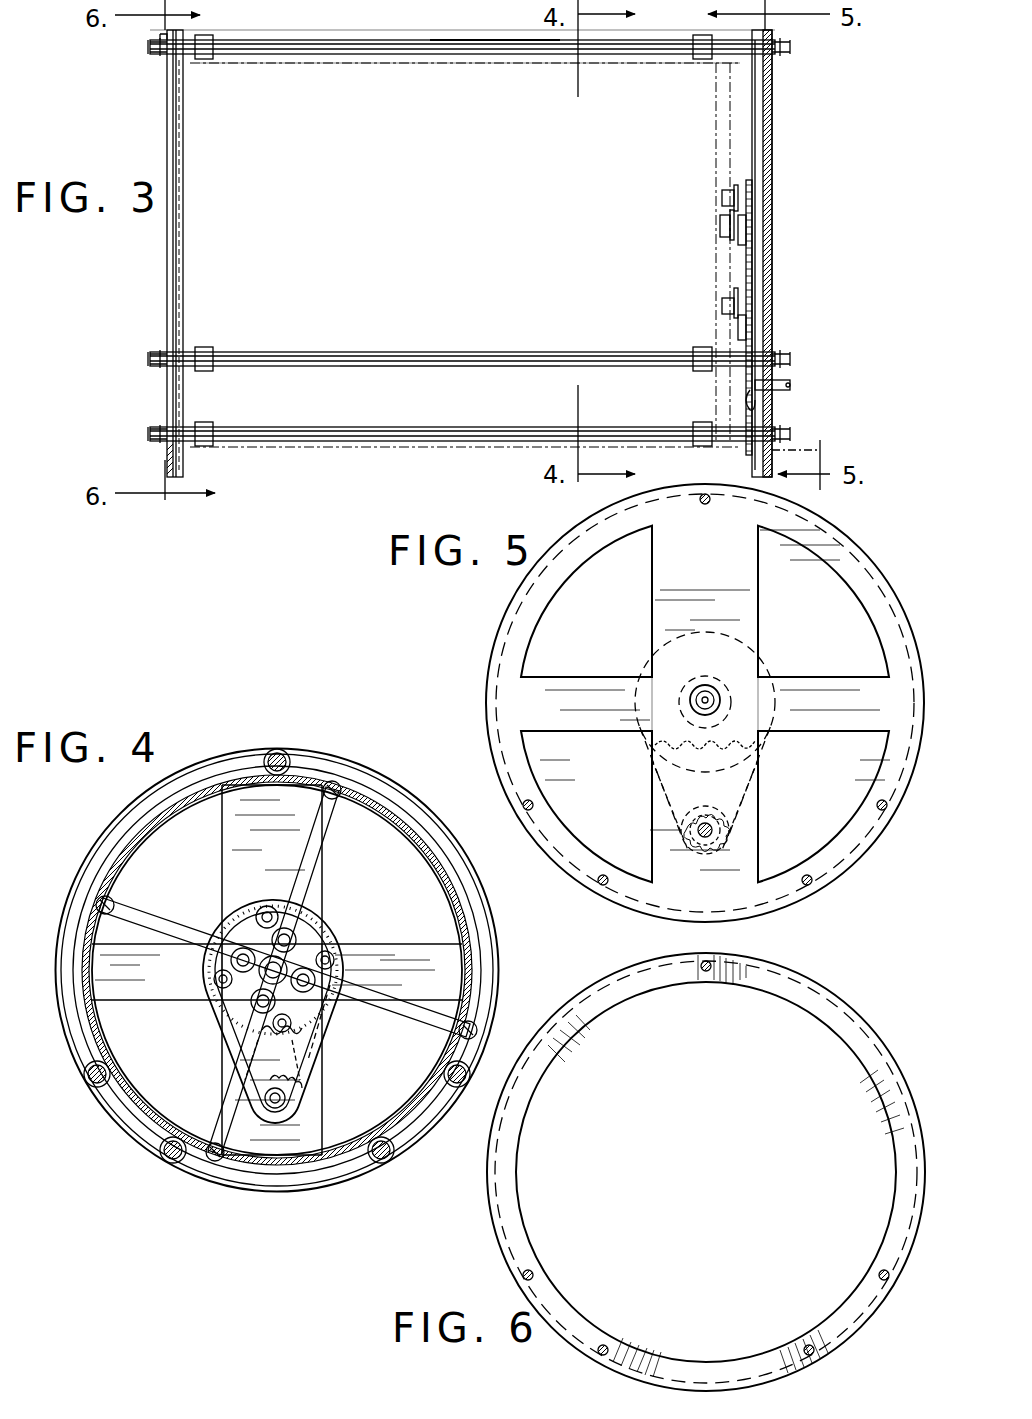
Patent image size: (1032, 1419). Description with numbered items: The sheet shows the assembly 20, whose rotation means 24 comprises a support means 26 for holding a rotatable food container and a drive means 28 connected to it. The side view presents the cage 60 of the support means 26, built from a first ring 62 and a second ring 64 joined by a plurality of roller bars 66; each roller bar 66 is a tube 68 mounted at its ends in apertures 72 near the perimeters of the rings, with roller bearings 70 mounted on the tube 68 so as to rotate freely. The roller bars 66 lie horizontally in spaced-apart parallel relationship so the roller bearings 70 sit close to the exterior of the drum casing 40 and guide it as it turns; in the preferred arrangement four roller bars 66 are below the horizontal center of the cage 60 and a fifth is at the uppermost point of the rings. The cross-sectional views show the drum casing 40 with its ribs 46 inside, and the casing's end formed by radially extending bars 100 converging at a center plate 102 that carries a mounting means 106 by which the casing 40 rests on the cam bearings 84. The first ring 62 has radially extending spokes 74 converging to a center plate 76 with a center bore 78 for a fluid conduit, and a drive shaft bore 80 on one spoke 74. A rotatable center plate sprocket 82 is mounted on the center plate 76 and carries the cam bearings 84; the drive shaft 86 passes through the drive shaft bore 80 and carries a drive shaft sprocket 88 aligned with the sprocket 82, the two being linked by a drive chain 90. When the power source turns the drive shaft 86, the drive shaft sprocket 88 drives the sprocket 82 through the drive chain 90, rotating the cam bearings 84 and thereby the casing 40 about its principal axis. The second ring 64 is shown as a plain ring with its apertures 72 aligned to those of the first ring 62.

In FIG. 3, the assembly 20 is at (782, 95).
In FIG. 3, the rotation means 24 is at (305, 40).
In FIG. 3, the support means 26 is at (367, 442).
In FIG. 3, the drive means 28 is at (772, 328).
In FIG. 4, the drive means 28 is at (298, 1128).
In FIG. 3, the drum casing 40 is at (643, 160).
In FIG. 4, the drum casing 40 is at (135, 825).
In FIG. 4, the ribs 46 is at (105, 895).
In FIG. 3, the cage 60 is at (460, 40).
In FIG. 3, the first ring 62 is at (768, 168).
In FIG. 4, the first ring 62 is at (345, 1165).
In FIG. 5, the first ring 62 is at (850, 568).
In FIG. 3, the second ring 64 is at (165, 282).
In FIG. 6, the second ring 64 is at (840, 1018).
In FIG. 3, the roller bars 66 is at (325, 355).
In FIG. 3, the tube 68 is at (465, 355).
In FIG. 3, the roller bearings 70 is at (205, 62).
In FIG. 4, the roller bearings 70 is at (285, 758).
In FIG. 5, the apertures 72 is at (705, 505).
In FIG. 6, the apertures 72 is at (710, 972).
In FIG. 4, the radially extending spokes 74 is at (205, 820).
In FIG. 5, the radially extending spokes 74 is at (652, 585).
In FIG. 5, the center plate 76 is at (735, 705).
In FIG. 4, the center bore 78 is at (225, 985).
In FIG. 5, the center bore 78 is at (690, 722).
In FIG. 4, the drive shaft bore 80 is at (278, 1125).
In FIG. 5, the drive shaft bore 80 is at (712, 833).
In FIG. 4, the center plate sprocket 82 is at (322, 940).
In FIG. 5, the center plate sprocket 82 is at (713, 662).
In FIG. 3, the cam bearings 84 is at (722, 198).
In FIG. 4, the cam bearings 84 is at (242, 912).
In FIG. 3, the drive shaft 86 is at (785, 388).
In FIG. 3, the drive shaft sprocket 88 is at (770, 410).
In FIG. 4, the drive shaft sprocket 88 is at (228, 1052).
In FIG. 5, the drive shaft sprocket 88 is at (705, 797).
In FIG. 3, the drive chain 90 is at (754, 330).
In FIG. 4, the drive chain 90 is at (337, 952).
In FIG. 5, the drive chain 90 is at (760, 747).
In FIG. 4, the radially extending bars 100 is at (335, 800).
In FIG. 4, the center plate 102 is at (312, 1060).
In FIG. 3, the mounting means 106 is at (720, 283).
In FIG. 4, the mounting means 106 is at (318, 1022).